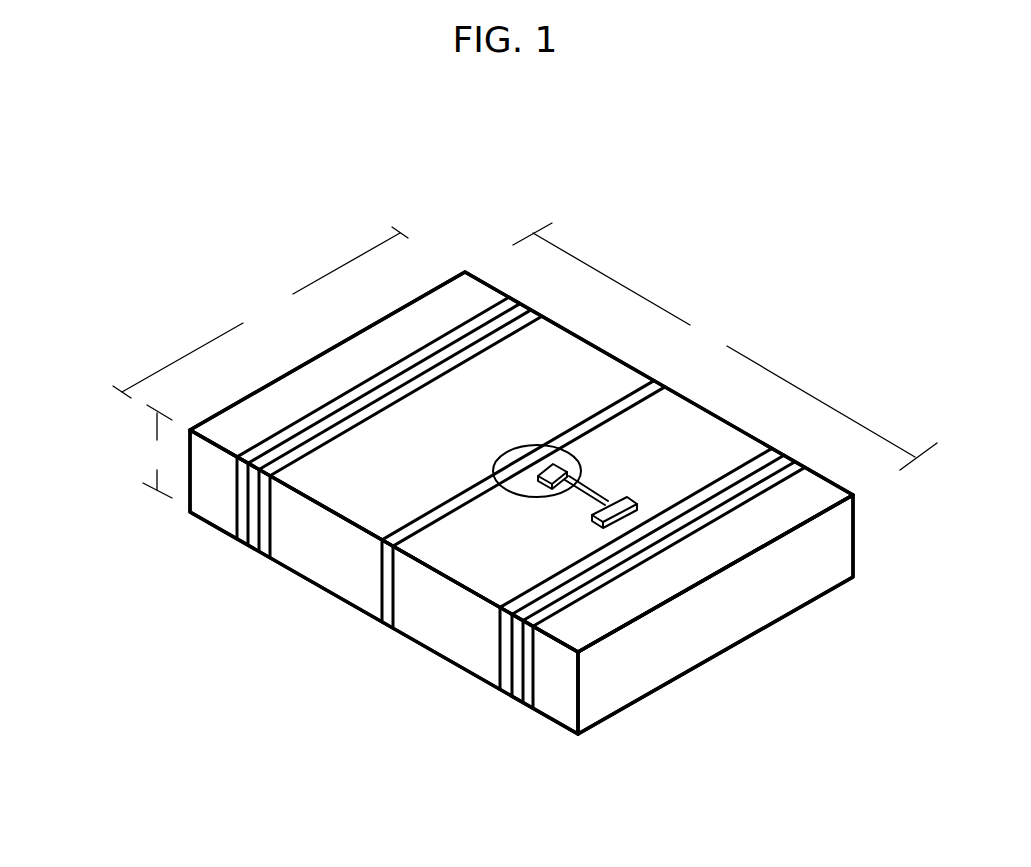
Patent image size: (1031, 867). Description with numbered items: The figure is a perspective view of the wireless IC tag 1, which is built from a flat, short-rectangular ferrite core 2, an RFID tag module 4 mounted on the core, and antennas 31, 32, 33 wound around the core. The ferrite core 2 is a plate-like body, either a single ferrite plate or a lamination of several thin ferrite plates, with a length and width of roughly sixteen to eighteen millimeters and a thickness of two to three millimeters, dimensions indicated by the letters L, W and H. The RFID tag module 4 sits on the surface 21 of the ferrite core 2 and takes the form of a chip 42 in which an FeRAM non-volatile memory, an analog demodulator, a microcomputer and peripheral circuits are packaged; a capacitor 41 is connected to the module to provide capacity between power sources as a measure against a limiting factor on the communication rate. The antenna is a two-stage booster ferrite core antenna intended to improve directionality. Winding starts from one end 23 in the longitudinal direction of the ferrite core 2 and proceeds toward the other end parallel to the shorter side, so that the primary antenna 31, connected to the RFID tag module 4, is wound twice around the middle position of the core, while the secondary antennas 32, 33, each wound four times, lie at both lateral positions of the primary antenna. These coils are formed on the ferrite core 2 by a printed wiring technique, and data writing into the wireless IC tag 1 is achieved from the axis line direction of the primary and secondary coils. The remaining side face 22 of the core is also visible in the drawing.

The wireless IC tag 1 is at (477, 215).
The ferrite core 2 is at (610, 612).
The surface of the ferrite core 21 is at (807, 497).
The side surface 22 is at (781, 586).
The one end in the longitudinal direction of the ferrite core 23 is at (303, 546).
The primary antenna 31 is at (382, 541).
The secondary antenna 32 is at (252, 462).
The secondary antenna 33 is at (501, 622).
The RFID tag module 4 is at (522, 483).
The capacitor 41 is at (543, 478).
The chip 42 is at (587, 522).